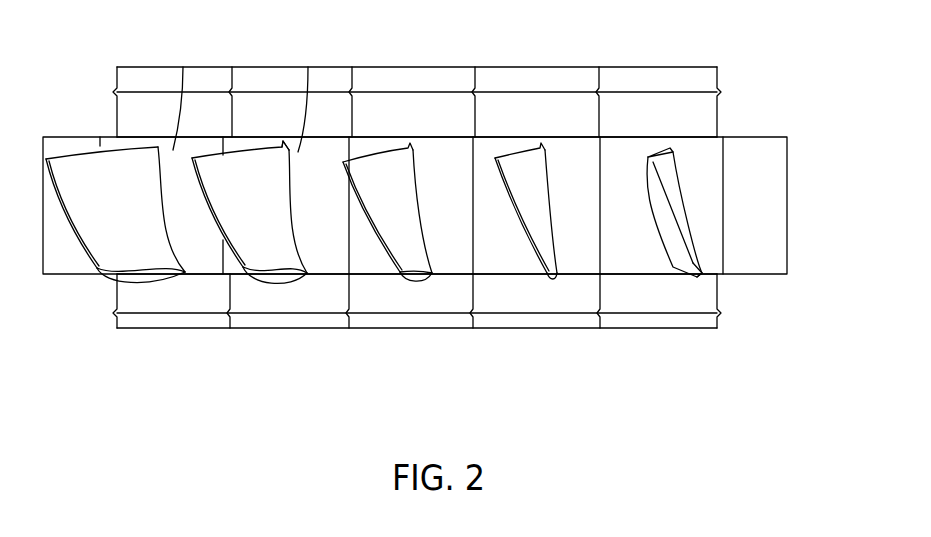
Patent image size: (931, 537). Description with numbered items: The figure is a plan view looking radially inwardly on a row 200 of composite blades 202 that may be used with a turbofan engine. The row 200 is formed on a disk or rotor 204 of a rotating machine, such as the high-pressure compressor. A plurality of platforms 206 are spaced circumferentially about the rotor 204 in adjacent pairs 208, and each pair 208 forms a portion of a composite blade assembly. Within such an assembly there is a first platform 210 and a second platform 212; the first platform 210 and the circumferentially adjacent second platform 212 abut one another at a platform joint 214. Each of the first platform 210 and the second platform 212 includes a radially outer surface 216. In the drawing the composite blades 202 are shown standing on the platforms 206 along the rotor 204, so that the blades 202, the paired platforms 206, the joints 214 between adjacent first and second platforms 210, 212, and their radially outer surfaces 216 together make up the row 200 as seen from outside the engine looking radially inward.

The row 200 is at (804, 161).
The composite blade 202 is at (135, 214).
The rotor 204 is at (643, 67).
The platform 206 is at (700, 162).
The adjacent pair 208 is at (130, 146).
The first platform 210 is at (232, 262).
The second platform 212 is at (318, 265).
The platform joint 214 is at (280, 145).
The radially outer surface 216 is at (243, 143).